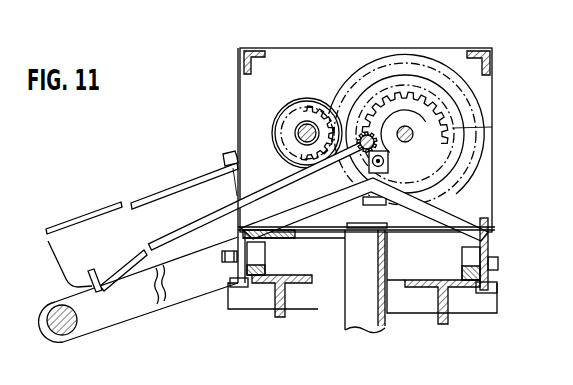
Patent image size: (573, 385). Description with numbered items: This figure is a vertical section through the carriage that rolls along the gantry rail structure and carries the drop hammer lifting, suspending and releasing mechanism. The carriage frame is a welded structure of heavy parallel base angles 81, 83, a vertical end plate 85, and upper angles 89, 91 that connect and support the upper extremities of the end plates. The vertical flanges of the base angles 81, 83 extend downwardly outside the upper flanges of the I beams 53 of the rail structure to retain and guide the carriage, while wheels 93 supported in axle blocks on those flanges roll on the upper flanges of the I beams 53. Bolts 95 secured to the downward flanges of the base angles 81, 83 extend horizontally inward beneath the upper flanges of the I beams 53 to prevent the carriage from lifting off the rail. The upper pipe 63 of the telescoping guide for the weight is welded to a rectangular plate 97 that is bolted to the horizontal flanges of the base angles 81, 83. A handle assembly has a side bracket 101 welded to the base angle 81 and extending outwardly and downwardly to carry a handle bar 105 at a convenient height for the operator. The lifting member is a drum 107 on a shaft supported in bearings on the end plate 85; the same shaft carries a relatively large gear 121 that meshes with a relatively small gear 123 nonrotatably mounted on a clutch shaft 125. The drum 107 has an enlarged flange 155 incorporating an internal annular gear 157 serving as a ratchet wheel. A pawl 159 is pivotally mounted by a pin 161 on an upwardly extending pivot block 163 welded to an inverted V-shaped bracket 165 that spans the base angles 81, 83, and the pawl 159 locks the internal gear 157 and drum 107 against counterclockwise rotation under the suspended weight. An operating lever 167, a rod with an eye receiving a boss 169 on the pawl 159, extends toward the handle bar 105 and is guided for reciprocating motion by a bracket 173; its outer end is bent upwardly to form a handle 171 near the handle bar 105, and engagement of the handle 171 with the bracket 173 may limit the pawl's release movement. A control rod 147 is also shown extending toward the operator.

The vertical end plate 85 is at (338, 53).
The upper angle 89 is at (256, 58).
The upper angle 91 is at (481, 51).
The large gear 121 is at (383, 70).
The enlarged flange 155 is at (400, 80).
The drum 107 is at (492, 127).
The internal annular gear 157 is at (380, 104).
The pawl 159 is at (405, 118).
The clutch shaft 125 is at (296, 126).
The small gear 123 is at (318, 116).
The control rod 147 is at (166, 191).
The operating lever 167 is at (199, 221).
The boss 169 is at (369, 134).
The pivot block 163 is at (388, 169).
The pin 161 is at (388, 156).
The inverted V-shaped bracket 165 is at (455, 228).
The base angle 81 is at (286, 237).
The rectangular plate 97 is at (416, 233).
The base angle 83 is at (490, 238).
The wheel 93 is at (265, 262).
The bolt 95 is at (249, 289).
The I beam 53 is at (288, 298).
The upper pipe 63 is at (350, 310).
The side bracket 101 is at (141, 297).
The handle bar 105 is at (63, 332).
The handle 171 is at (49, 269).
The bracket 173 is at (93, 270).